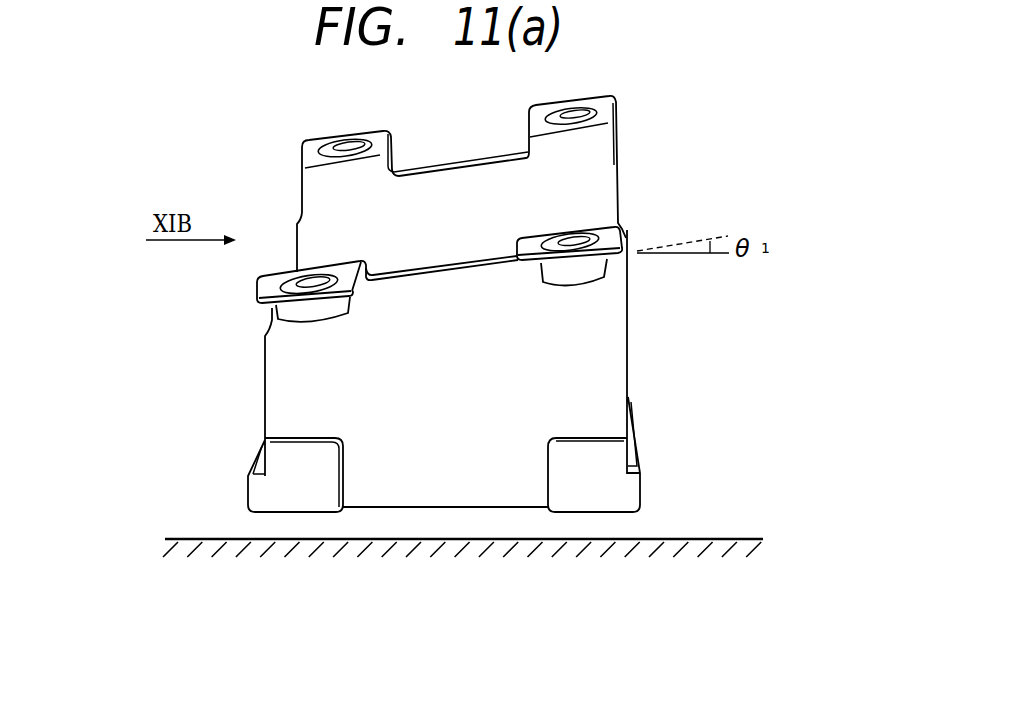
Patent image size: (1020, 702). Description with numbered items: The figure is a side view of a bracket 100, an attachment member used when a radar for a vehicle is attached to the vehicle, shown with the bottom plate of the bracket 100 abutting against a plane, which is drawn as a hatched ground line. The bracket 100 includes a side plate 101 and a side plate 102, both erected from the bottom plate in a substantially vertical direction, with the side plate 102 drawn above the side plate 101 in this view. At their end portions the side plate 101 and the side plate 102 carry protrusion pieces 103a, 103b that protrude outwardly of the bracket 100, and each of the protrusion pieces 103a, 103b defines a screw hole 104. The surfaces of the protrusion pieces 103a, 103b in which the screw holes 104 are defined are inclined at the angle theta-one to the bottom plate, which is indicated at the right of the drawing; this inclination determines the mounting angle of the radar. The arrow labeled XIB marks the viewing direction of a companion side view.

The bracket 100 is at (662, 68).
The side plate 101 is at (610, 377).
The side plate 102 is at (610, 167).
The protrusion piece 103a is at (307, 150).
The protrusion piece 103b is at (611, 110).
The screw hole 104 is at (352, 295).